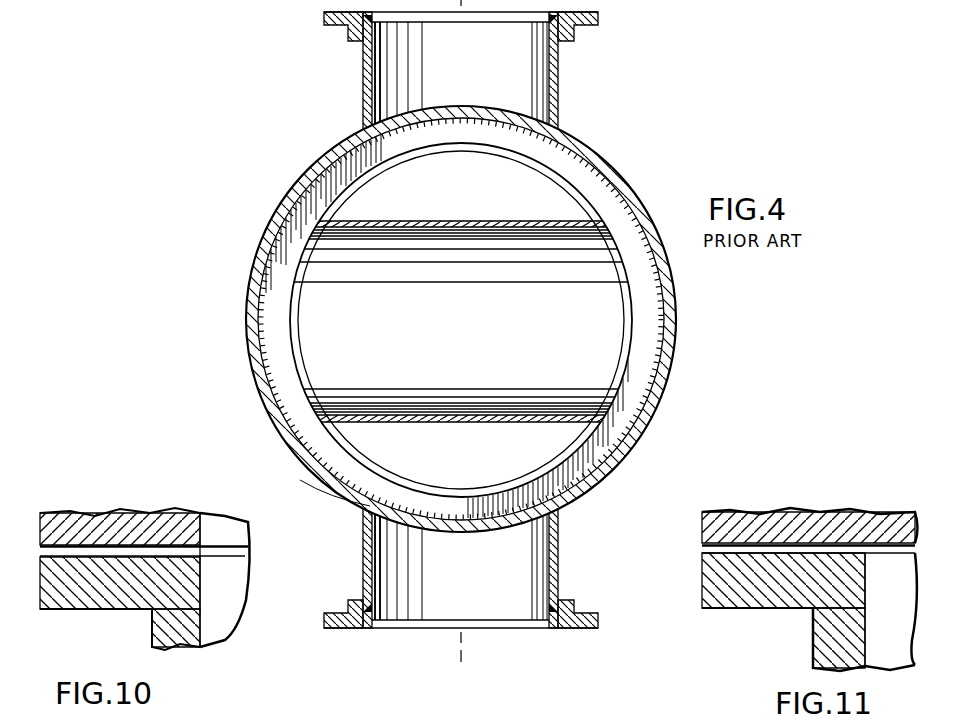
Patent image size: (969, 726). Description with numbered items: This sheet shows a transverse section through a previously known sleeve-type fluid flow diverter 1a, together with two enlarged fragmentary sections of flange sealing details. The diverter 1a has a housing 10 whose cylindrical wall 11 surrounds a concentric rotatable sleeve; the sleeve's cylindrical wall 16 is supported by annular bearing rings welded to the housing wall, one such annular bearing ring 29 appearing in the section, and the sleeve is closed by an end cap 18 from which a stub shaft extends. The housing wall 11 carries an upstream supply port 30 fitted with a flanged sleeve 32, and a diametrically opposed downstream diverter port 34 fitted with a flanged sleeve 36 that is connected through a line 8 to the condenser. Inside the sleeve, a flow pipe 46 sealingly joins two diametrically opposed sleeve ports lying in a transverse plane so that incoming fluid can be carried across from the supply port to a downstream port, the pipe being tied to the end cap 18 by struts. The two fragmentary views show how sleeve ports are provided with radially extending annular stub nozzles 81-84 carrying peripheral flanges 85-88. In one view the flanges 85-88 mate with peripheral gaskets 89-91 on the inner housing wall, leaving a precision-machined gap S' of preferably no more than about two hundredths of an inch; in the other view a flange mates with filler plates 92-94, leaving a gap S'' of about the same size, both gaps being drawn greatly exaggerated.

In FIG. 4, the sleeve-type fluid flow diverter 1a is at (268, 182).
In FIG. 4, the housing 10 is at (247, 283).
In FIG. 4, the cylindrical wall 11 is at (262, 251).
In FIG. 4, the annular bearing ring 29 is at (268, 326).
In FIG. 4, the sleeve end cap 18 is at (433, 199).
In FIG. 4, the cylindrical wall 16 is at (368, 488).
In FIG. 4, the flow pipe 46 is at (398, 424).
In FIG. 4, the port 30 is at (499, 78).
In FIG. 4, the flanged sleeve 32 is at (558, 94).
In FIG. 4, the downstream diverter port 34 is at (505, 584).
In FIG. 4, the flanged sleeve 36 is at (560, 553).
In FIG. 4, the line 8 is at (464, 646).
In FIG. 10, the peripheral gaskets 89-91 is at (120, 508).
In FIG. 10, the peripheral flanges 85-88 is at (136, 594).
In FIG. 11, the peripheral flanges 85-88 is at (802, 610).
In FIG. 10, the annular stub nozzles 81-84 is at (174, 632).
In FIG. 11, the annular stub nozzles 81-84 is at (835, 652).
In FIG. 10, the gap S' is at (125, 546).
In FIG. 11, the plates 92-94 is at (852, 478).
In FIG. 11, the gap S'' is at (791, 546).